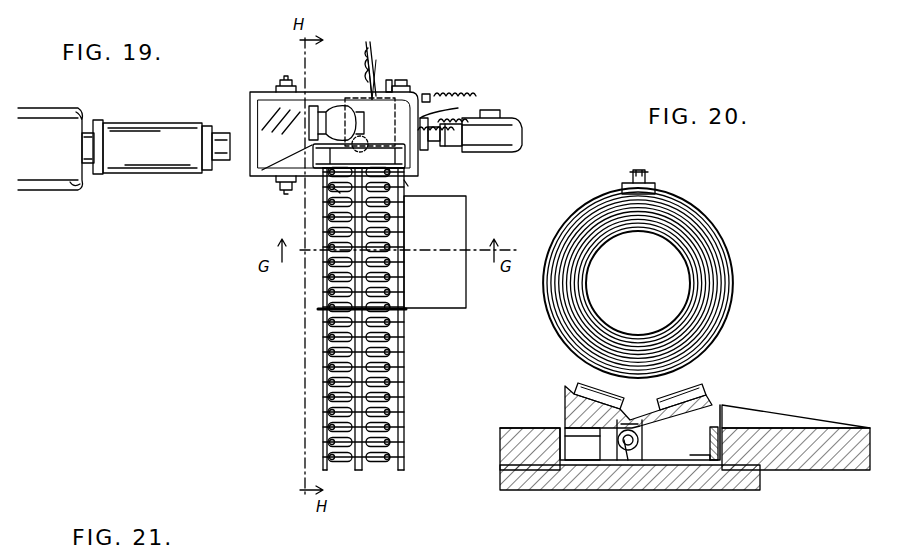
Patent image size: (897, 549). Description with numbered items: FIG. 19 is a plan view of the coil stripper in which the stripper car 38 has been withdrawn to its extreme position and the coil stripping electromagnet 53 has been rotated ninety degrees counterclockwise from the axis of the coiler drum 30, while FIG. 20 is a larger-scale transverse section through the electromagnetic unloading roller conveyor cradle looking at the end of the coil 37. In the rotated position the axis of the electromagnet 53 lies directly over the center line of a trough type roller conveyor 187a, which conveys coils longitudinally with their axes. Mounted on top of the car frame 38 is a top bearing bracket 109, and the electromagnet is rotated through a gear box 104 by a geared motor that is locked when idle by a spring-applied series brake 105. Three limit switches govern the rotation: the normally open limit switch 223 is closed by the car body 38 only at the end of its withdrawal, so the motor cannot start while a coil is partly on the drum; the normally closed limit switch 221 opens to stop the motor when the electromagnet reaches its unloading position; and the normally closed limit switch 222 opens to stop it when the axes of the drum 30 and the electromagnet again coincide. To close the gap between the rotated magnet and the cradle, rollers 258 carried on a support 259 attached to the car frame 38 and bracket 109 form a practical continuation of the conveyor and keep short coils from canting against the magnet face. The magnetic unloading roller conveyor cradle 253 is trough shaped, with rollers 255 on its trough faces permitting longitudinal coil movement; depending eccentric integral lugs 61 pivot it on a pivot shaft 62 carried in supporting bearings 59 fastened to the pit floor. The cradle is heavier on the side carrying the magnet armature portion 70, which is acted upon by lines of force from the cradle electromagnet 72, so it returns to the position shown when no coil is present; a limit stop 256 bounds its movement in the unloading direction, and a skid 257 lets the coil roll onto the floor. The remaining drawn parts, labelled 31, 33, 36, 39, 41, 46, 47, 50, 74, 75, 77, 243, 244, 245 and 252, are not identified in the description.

In FIG. 19, the coiler drum 30 is at (170, 110).
In FIG. 19, the coupling 31 is at (92, 133).
In FIG. 19, the tube 33 is at (40, 128).
In FIG. 19, the flange 36 is at (100, 174).
In FIG. 20, the coil 37 is at (722, 254).
In FIG. 19, the stripper car 38 is at (252, 100).
In FIG. 19, the bolt 39 is at (276, 86).
In FIG. 19, the motor 41 is at (498, 138).
In FIG. 19, the coupling plate 46 is at (426, 152).
In FIG. 19, the shaft coupling 47 is at (440, 140).
In FIG. 19, the bolt 50 is at (400, 80).
In FIG. 19, the coil stripping electromagnet 53 is at (262, 170).
In FIG. 20, the supporting bearings 59 is at (626, 452).
In FIG. 20, the depending eccentric integral lugs 61 is at (622, 450).
In FIG. 20, the pivot shaft 62 is at (628, 450).
In FIG. 20, the magnet armature portion 70 is at (566, 404).
In FIG. 20, the cradle electromagnet 72 is at (580, 448).
In FIG. 20, the base 74 is at (520, 428).
In FIG. 20, the clamp 75 is at (656, 188).
In FIG. 21, the clamp 75 is at (375, 542).
In FIG. 21, the arm 77 is at (258, 536).
In FIG. 19, the gear box 104 is at (322, 110).
In FIG. 19, the series brake 105 is at (309, 108).
In FIG. 19, the top bearing bracket 109 is at (390, 80).
In FIG. 19, the trough type roller conveyor 187a is at (398, 356).
In FIG. 19, the limit switch 221 is at (438, 113).
In FIG. 19, the limit switch 222 is at (372, 90).
In FIG. 19, the limit switch 223 is at (428, 94).
In FIG. 19, the spring 243 is at (466, 90).
In FIG. 19, the spring end 244 is at (372, 60).
In FIG. 19, the spring 245 is at (440, 120).
In FIG. 19, the hammer 252 is at (372, 70).
In FIG. 19, the magnetic unloading roller conveyor cradle 253 is at (320, 282).
In FIG. 20, the magnetic unloading roller conveyor cradle 253 is at (712, 400).
In FIG. 19, the rollers 255 is at (340, 230).
In FIG. 20, the rollers 255 is at (580, 384).
In FIG. 20, the limit stop 256 is at (718, 450).
In FIG. 19, the skid 257 is at (460, 292).
In FIG. 20, the skid 257 is at (780, 418).
In FIG. 19, the rollers 258 is at (406, 182).
In FIG. 19, the support 259 is at (316, 196).